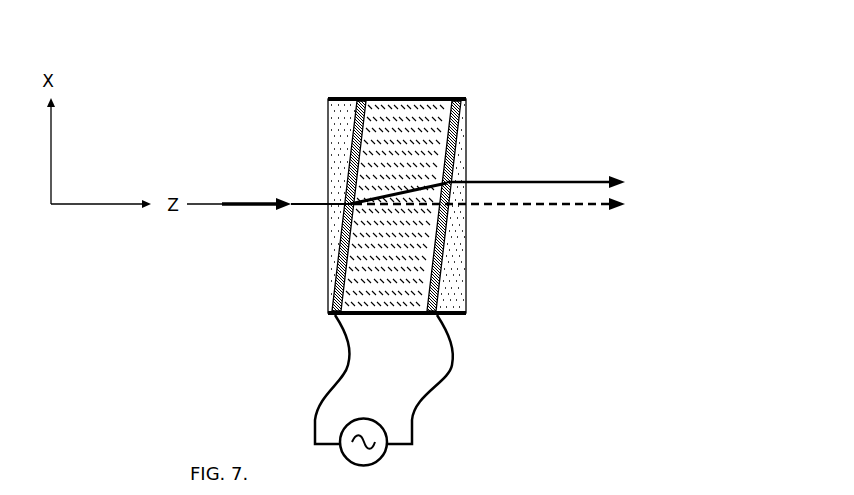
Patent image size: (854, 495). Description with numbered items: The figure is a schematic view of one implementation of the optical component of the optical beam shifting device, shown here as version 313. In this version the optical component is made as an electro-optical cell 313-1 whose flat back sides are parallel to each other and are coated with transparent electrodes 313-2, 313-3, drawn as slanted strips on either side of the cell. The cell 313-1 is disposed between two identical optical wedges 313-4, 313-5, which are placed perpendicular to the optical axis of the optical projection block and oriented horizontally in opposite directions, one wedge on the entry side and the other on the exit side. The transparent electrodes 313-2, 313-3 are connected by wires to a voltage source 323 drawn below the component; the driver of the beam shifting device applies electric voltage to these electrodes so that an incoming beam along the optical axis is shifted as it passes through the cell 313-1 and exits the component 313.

The optical component 313 is at (444, 172).
The electro-optical cell 313-1 is at (408, 112).
The transparent electrode 313-2 is at (358, 97).
The transparent electrode 313-3 is at (466, 106).
The optical wedge 313-4 is at (335, 135).
The optical wedge 313-5 is at (460, 293).
The voltage source 323 is at (385, 462).